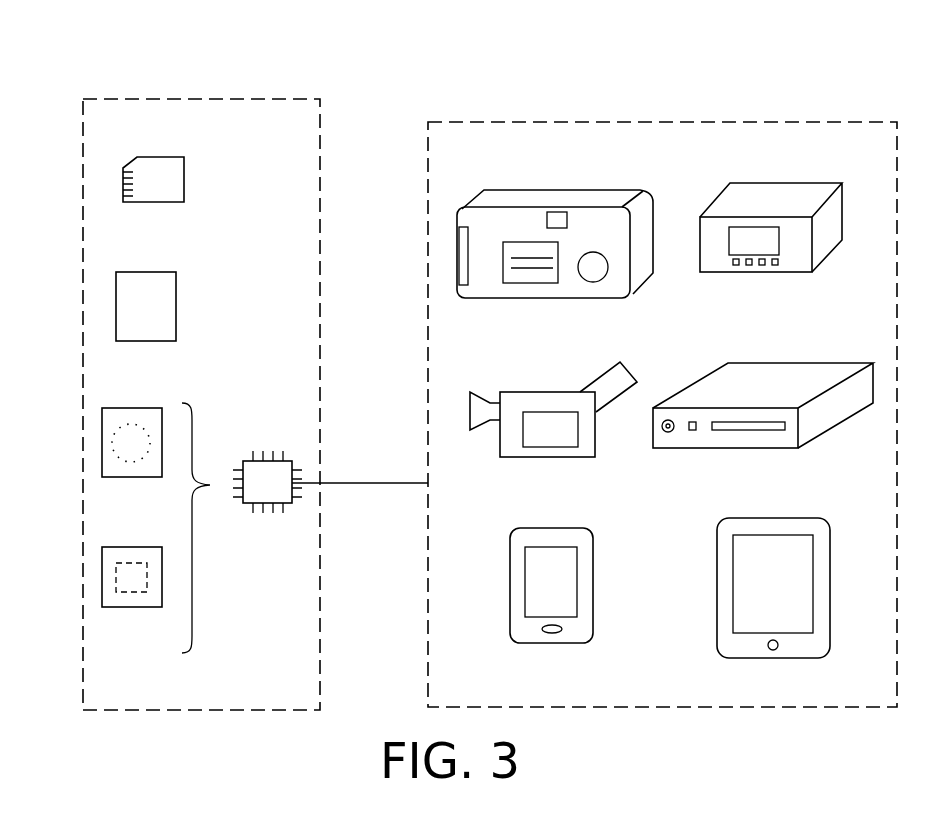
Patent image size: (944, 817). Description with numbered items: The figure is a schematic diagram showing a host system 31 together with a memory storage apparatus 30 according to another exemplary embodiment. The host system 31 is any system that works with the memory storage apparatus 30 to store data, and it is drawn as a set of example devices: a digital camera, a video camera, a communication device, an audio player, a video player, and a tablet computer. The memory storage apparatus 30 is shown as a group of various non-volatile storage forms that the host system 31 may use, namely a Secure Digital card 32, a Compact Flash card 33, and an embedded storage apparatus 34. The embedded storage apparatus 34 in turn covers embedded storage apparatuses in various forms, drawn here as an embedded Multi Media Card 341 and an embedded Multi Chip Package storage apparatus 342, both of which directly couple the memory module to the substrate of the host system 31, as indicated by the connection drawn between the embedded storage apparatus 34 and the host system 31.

The memory storage apparatus 30 is at (190, 98).
The host system 31 is at (590, 120).
The Secure Digital (SD) card 32 is at (123, 185).
The Compact Flash (CF) card 33 is at (116, 310).
The embedded storage apparatus 34 is at (268, 457).
The embedded Multi Media Card (eMMC) 341 is at (102, 445).
The embedded Multi Chip Package (eMCP) storage apparatus 342 is at (102, 580).